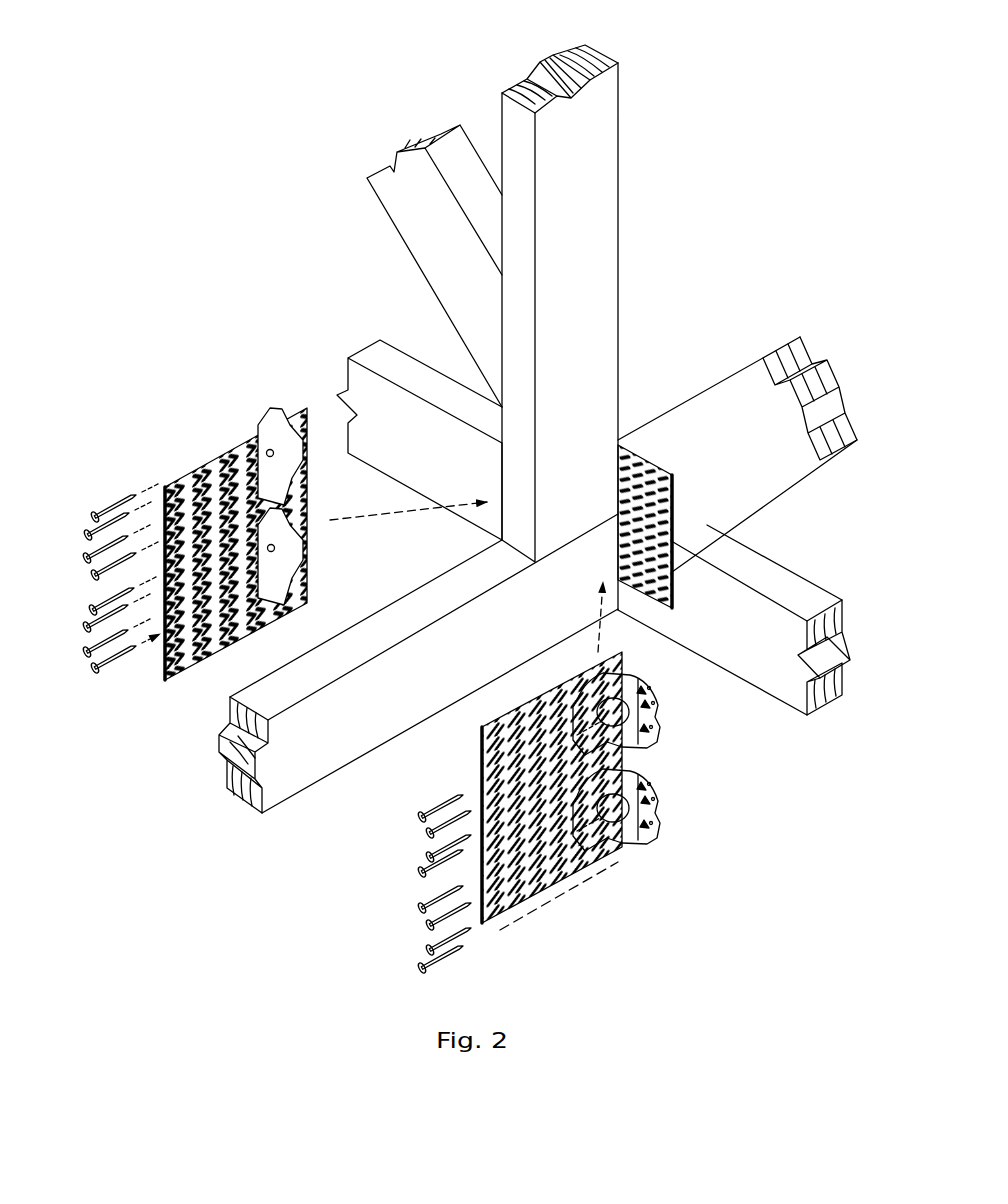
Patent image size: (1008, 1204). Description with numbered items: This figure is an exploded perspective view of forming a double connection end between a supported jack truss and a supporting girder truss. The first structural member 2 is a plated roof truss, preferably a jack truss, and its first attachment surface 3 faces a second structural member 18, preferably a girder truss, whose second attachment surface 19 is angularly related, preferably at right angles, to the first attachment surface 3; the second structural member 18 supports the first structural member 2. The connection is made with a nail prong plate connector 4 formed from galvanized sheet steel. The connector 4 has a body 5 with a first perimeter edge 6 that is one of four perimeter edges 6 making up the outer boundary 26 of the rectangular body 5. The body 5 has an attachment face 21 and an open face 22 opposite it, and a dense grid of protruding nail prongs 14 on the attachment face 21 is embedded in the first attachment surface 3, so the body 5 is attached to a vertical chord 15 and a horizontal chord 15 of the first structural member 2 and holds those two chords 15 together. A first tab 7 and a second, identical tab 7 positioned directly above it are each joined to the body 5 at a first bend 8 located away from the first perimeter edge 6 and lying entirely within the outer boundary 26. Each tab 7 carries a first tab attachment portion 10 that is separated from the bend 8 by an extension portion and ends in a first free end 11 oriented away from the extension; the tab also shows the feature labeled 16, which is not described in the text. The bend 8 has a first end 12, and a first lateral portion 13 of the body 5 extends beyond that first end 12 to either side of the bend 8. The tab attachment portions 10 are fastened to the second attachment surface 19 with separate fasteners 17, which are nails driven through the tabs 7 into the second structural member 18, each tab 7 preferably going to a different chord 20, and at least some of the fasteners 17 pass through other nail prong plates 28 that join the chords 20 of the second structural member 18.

The first structural member 2 is at (614, 62).
The first attachment surface 3 is at (612, 100).
The nail prong plate connector 4 is at (167, 485).
The body 5 is at (170, 684).
The first perimeter edge 6 is at (302, 407).
The first tab 7 is at (265, 408).
The first bend 8 is at (621, 697).
The first tab attachment portion 10 is at (659, 717).
The first free end 11 is at (662, 702).
The first end 12 is at (600, 673).
The first lateral portion 13 is at (593, 677).
The nail prongs 14 is at (207, 480).
The chord 15 is at (621, 130).
The tab teeth 16 is at (643, 692).
The separate fasteners 17 is at (87, 558).
The second structural member 18 is at (420, 269).
The second attachment surface 19 is at (420, 426).
The chord 20 is at (393, 226).
The attachment face 21 is at (185, 666).
The open face 22 is at (565, 883).
The outer boundary 26 is at (178, 480).
The nail prong plates 28 is at (674, 602).